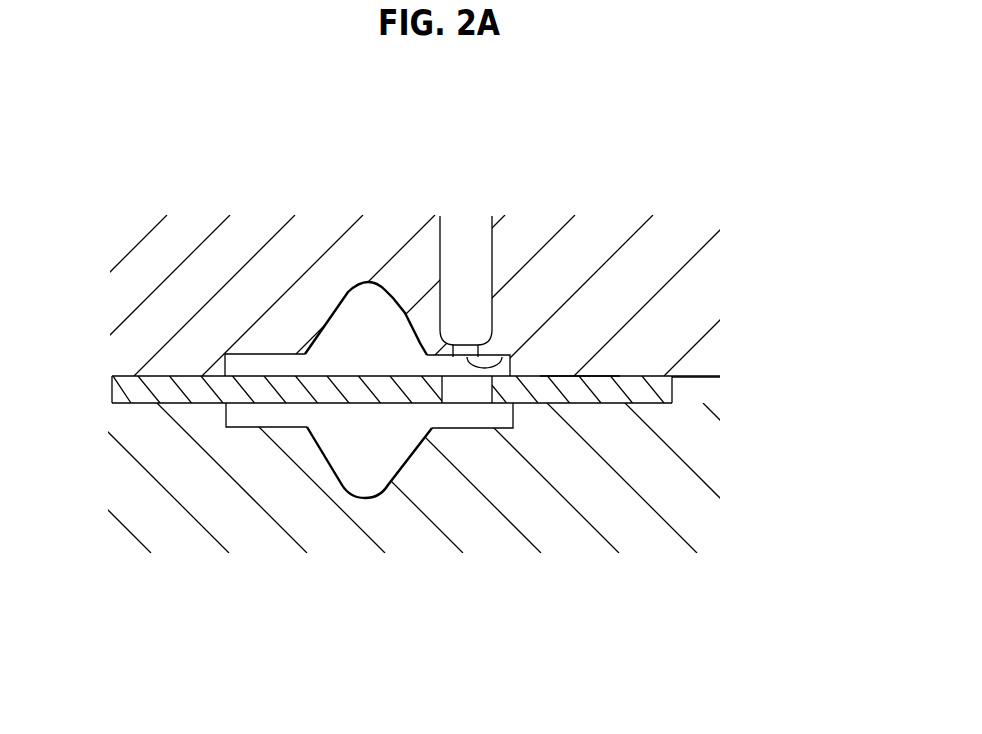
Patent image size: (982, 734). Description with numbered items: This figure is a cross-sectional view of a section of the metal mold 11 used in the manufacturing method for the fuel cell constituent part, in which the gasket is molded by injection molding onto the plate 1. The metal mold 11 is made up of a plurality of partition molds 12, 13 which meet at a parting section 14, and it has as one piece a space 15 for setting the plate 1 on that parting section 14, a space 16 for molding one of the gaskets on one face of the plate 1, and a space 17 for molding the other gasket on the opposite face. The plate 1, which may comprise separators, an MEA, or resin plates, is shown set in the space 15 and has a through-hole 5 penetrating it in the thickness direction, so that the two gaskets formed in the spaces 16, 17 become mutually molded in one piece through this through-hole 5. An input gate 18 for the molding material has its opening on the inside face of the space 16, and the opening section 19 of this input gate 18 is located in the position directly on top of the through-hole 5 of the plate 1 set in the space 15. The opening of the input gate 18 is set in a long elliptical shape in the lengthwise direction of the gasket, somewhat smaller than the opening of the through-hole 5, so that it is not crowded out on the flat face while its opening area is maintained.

The plate 1 is at (122, 385).
The through-hole 5 is at (467, 395).
The metal mold 11 is at (172, 262).
The partition mold 12 is at (675, 288).
The partition mold 13 is at (693, 430).
The parting section 14 is at (710, 377).
The space for setting the plate 15 is at (578, 377).
The space for molding one of the gaskets 16 is at (366, 320).
The space for molding the other gasket 17 is at (358, 467).
The input gate 18 is at (465, 242).
The opening section 19 is at (503, 356).